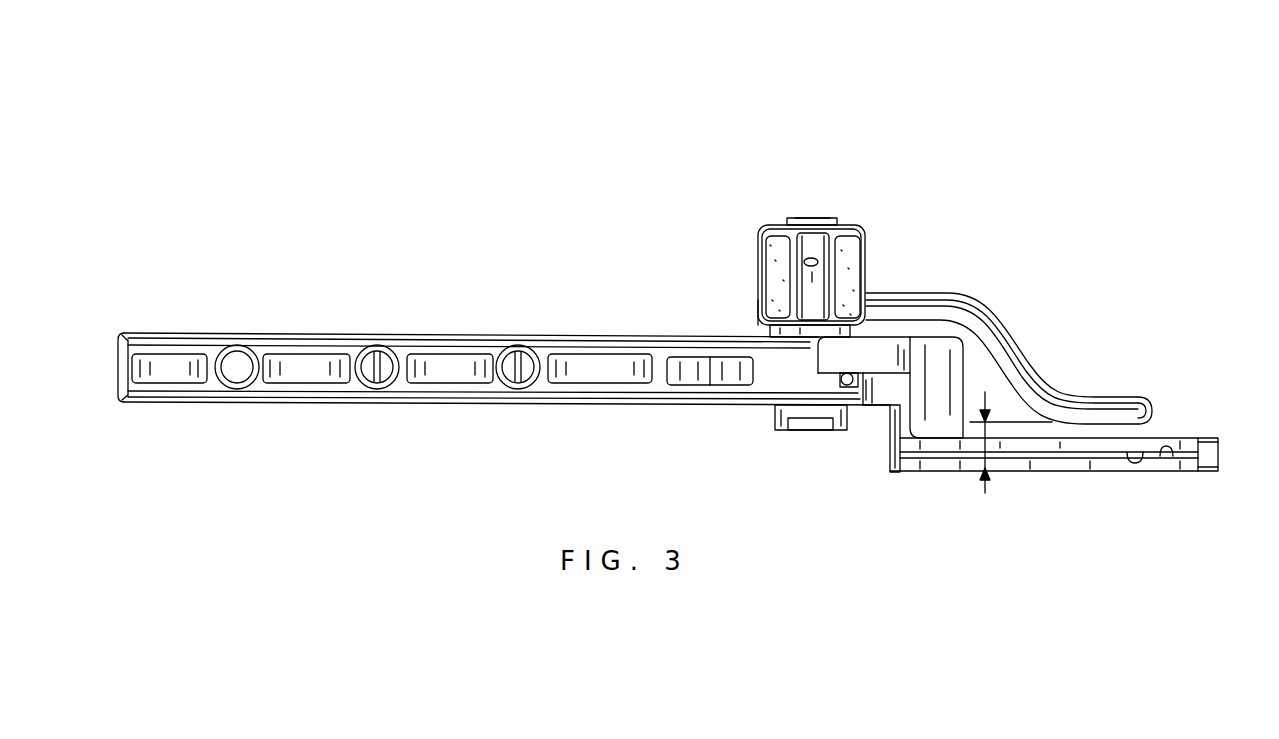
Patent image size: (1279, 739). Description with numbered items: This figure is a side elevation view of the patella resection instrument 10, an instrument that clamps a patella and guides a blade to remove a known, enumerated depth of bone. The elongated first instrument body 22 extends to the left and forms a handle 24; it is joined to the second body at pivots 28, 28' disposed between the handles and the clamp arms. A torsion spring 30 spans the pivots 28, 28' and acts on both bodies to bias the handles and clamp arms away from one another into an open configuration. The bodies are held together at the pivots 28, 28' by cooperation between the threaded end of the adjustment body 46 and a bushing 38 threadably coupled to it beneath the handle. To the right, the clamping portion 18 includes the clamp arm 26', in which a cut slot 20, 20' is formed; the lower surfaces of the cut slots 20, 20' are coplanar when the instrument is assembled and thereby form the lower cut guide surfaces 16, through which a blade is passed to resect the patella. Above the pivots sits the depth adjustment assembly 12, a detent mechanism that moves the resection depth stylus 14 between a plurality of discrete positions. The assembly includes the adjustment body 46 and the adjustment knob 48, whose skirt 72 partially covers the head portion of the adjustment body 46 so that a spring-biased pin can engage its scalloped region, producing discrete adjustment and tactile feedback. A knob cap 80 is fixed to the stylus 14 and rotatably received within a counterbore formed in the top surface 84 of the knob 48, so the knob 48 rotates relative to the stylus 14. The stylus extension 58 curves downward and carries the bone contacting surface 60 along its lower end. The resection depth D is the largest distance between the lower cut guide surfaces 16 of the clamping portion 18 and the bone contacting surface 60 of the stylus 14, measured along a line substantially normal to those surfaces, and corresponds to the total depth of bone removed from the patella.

The patella resection instrument 10 is at (520, 97).
The depth adjustment assembly 12 is at (799, 228).
The resection depth stylus 14 is at (1033, 347).
The cut guide surfaces 16 is at (1140, 458).
The clamping portion 18 is at (1225, 432).
The cut slot 20 is at (1054, 496).
The cut slot 20' is at (1054, 454).
The first instrument body 22 is at (504, 356).
The handle 24 is at (302, 392).
The clamp arm 26' is at (1236, 470).
The pivot 28 is at (906, 369).
The pivot 28' is at (938, 329).
The torsion spring 30 is at (840, 381).
The bushing 38 is at (810, 430).
The adjustment body 46 is at (797, 328).
The adjustment knob 48 is at (867, 231).
The stylus extension 58 is at (962, 305).
The bone contacting surface 60 is at (1145, 427).
The skirt 72 is at (765, 313).
The knob cap 80 is at (797, 216).
The top surface 84 is at (838, 220).
The resection depth D is at (984, 445).